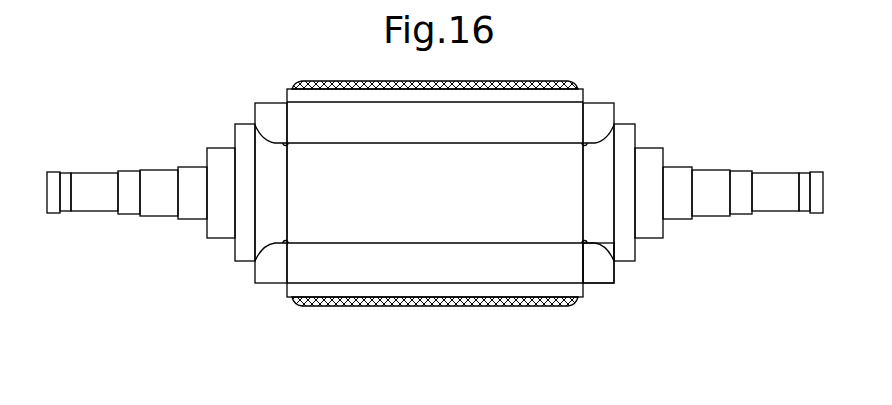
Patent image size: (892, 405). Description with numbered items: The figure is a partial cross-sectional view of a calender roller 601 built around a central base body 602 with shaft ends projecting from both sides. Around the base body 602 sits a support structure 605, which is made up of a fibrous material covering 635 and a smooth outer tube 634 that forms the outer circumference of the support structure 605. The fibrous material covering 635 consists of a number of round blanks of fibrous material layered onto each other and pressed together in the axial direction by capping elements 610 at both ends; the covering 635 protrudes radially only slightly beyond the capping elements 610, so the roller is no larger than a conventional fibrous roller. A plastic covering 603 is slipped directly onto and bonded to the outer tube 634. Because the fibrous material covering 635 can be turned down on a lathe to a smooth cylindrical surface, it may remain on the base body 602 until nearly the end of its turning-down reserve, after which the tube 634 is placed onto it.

The calender roller 601 is at (337, 307).
The base body 602 is at (250, 223).
The covering 603 is at (540, 303).
The support structure 605 is at (397, 296).
The capping elements 610 is at (266, 291).
The outer tube 634 is at (562, 287).
The fibrous material covering 635 is at (565, 262).